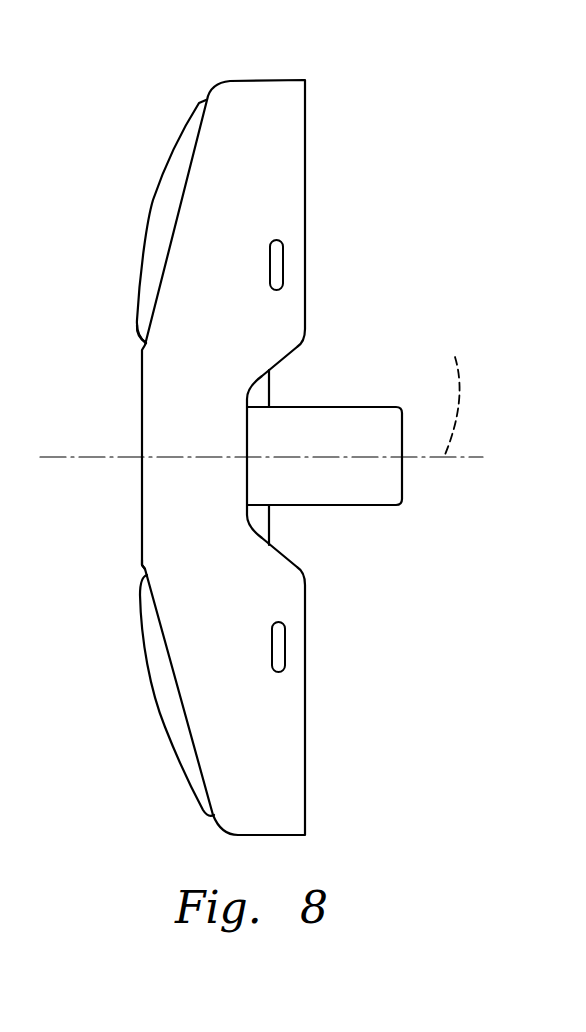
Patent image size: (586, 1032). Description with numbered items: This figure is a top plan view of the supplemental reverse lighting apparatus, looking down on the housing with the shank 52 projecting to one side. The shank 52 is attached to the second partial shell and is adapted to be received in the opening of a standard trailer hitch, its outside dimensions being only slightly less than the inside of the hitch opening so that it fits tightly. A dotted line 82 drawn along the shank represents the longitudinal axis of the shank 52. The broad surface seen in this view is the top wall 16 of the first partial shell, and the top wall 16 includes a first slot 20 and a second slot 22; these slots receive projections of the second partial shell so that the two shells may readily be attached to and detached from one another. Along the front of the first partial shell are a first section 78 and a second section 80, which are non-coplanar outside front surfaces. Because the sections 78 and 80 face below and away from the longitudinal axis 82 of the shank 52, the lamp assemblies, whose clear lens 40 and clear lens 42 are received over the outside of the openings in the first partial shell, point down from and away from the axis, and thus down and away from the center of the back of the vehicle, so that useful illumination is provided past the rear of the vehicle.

The top wall 16 is at (280, 596).
The first slot 20 is at (276, 262).
The second slot 22 is at (277, 652).
The clear lens 40 is at (147, 238).
The clear lens 42 is at (167, 727).
The shank 52 is at (327, 438).
The first section 78 is at (138, 342).
The second section 80 is at (143, 570).
The dotted line 82 is at (454, 392).